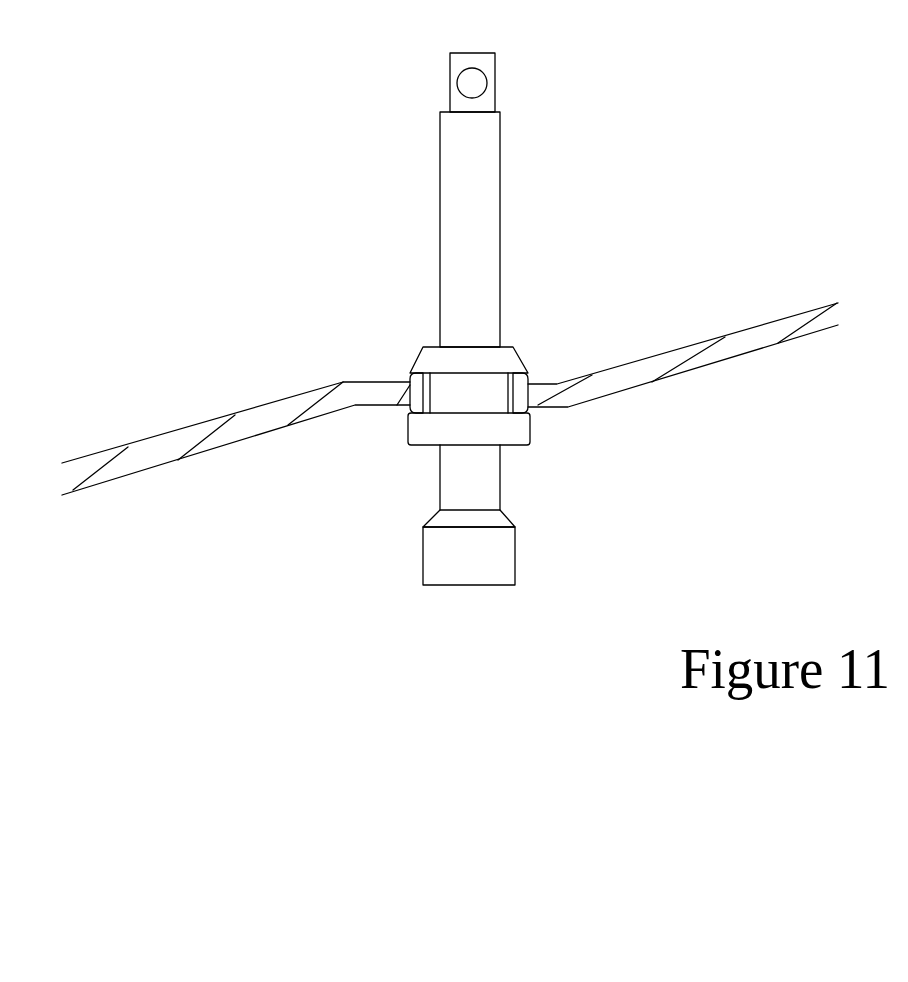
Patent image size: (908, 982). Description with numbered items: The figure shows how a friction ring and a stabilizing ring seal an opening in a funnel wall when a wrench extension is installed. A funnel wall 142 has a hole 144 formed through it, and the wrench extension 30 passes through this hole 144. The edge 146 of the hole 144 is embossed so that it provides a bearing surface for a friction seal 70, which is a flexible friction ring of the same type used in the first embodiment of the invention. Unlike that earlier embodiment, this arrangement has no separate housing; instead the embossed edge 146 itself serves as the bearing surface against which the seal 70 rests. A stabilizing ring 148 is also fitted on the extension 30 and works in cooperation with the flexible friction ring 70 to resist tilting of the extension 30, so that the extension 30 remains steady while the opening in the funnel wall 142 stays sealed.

The extension 30 is at (473, 160).
The friction seal 70 is at (505, 360).
The funnel wall 142 is at (773, 345).
The hole 144 is at (508, 403).
The edge 146 is at (442, 362).
The stabilizing ring 148 is at (428, 428).